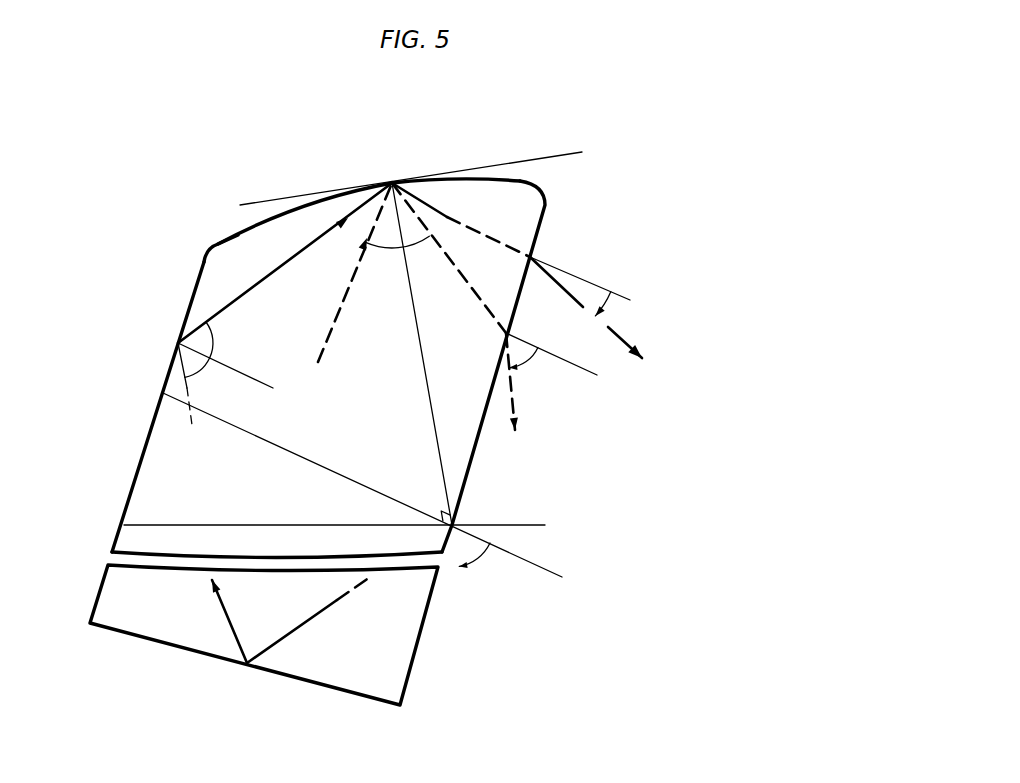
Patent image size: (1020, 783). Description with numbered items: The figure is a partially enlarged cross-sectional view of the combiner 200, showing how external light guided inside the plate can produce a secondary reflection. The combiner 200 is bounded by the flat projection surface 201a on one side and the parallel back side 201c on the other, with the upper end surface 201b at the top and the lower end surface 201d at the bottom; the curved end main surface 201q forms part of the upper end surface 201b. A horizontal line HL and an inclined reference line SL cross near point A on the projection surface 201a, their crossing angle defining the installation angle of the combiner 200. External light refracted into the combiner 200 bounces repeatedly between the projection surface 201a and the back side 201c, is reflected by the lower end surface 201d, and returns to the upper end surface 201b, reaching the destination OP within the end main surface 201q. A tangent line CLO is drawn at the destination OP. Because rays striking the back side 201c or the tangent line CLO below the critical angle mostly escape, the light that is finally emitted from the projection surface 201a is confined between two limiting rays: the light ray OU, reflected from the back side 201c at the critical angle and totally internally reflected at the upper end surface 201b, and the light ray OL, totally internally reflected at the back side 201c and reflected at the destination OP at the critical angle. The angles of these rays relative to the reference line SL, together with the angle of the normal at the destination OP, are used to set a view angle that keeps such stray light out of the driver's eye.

The combiner 200 is at (302, 432).
The projection surface 201a is at (470, 470).
The upper end surface 201b is at (206, 254).
The back side 201c is at (135, 482).
The lower end surface 201d is at (283, 675).
The end main surface 201q is at (285, 213).
The destination OP is at (392, 183).
The tangent line CLO is at (555, 155).
The horizontal line HL is at (517, 522).
The reference line SL is at (562, 577).
The point A on right surface A is at (452, 525).
The light ray OU is at (617, 340).
The light ray OL is at (513, 390).